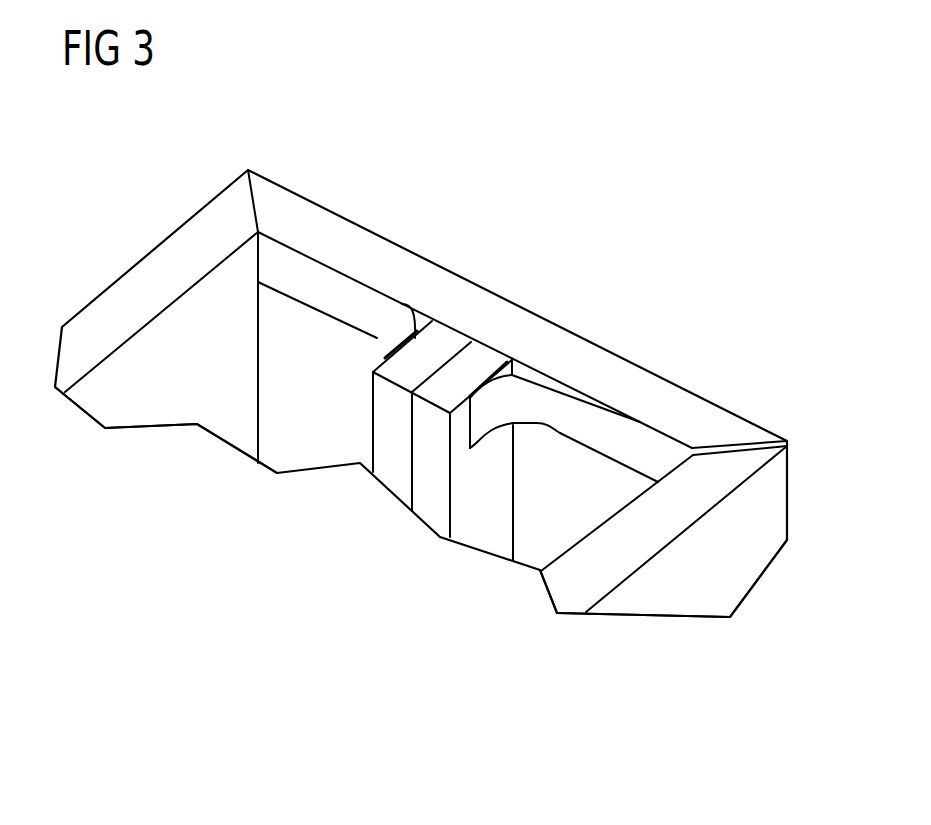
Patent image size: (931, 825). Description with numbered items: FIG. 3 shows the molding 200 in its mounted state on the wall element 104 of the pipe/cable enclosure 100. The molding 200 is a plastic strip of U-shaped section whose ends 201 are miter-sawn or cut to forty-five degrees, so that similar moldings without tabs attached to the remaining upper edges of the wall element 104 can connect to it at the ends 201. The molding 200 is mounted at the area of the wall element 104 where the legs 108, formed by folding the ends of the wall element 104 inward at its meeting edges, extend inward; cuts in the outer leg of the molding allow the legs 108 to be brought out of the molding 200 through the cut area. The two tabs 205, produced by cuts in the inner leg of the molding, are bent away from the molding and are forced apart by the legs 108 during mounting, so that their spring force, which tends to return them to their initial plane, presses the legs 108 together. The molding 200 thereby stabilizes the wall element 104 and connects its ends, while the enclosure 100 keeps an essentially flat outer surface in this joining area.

The enclosure 100 is at (165, 190).
The molding 200 is at (492, 303).
The ends of the molding 201 is at (265, 192).
The wall element 104 is at (130, 413).
The legs 108 is at (405, 483).
The tabs 205 is at (393, 335).